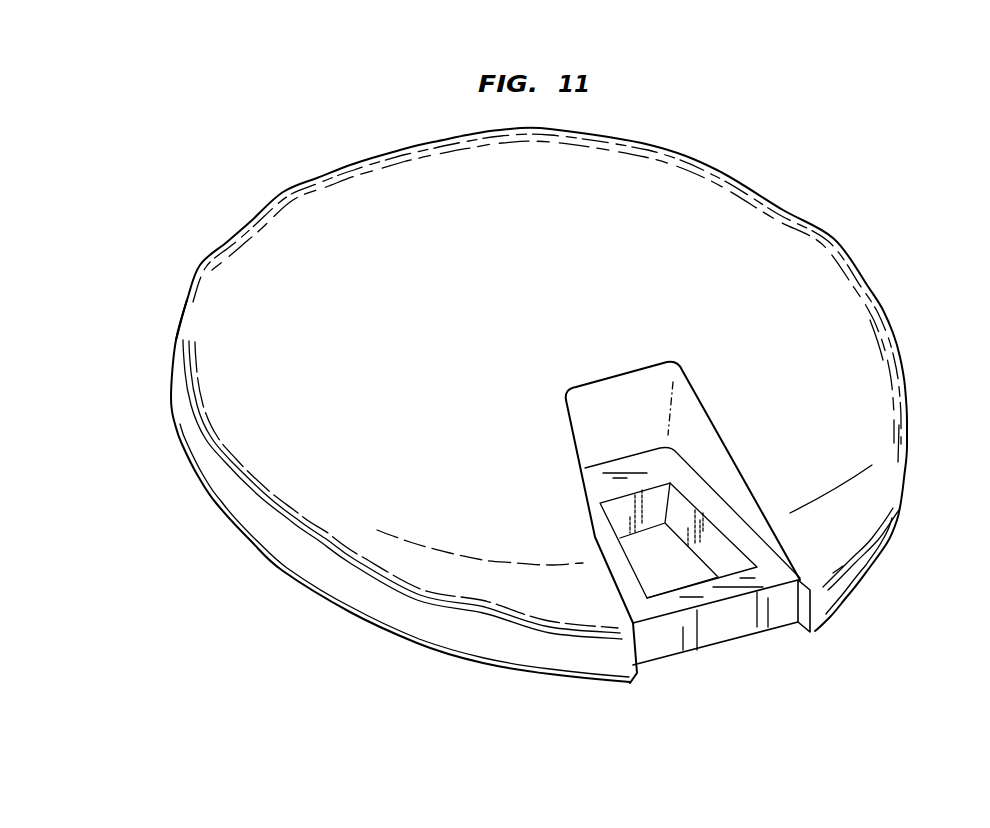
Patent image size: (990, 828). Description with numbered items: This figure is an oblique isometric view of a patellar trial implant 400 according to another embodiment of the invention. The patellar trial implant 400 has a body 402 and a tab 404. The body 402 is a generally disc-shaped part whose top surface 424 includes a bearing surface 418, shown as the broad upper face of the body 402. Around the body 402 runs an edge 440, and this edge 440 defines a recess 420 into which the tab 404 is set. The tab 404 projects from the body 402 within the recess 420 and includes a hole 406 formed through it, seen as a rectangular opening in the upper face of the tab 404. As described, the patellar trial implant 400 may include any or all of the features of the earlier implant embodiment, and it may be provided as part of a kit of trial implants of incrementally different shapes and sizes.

The patellar trial implant 400 is at (538, 409).
The body 402 is at (320, 505).
The tab 404 is at (723, 526).
The hole 406 is at (676, 567).
The bearing surface 418 is at (534, 288).
The recess 420 is at (804, 646).
The top surface 424 is at (320, 335).
The edge 440 is at (415, 623).